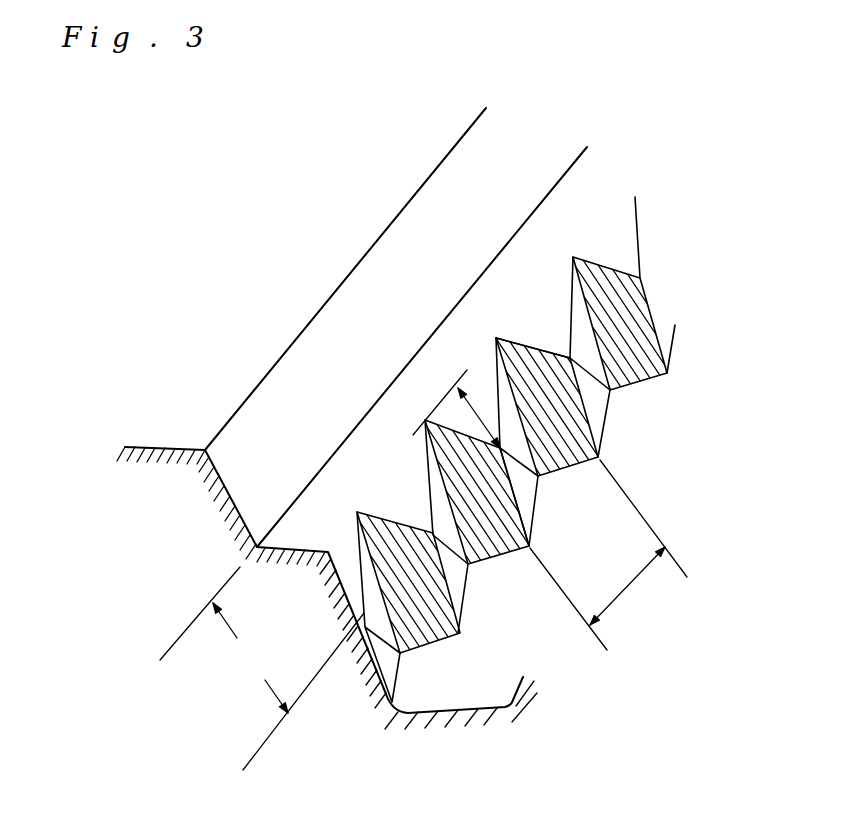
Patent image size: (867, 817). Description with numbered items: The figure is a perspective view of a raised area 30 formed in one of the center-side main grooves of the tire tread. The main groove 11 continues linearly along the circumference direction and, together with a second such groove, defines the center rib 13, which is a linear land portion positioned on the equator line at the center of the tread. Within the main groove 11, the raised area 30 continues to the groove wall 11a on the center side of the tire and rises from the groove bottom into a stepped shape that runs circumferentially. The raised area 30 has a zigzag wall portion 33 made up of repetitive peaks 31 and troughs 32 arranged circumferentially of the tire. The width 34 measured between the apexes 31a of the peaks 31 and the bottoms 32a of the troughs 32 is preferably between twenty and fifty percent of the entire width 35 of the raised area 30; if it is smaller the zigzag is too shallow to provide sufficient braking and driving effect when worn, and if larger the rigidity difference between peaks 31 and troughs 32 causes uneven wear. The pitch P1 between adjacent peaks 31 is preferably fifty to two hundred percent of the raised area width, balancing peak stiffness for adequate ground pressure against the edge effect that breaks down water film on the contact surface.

The main groove 11 is at (425, 693).
The groove wall 11a is at (455, 233).
The center rib 13 is at (337, 240).
The raised area 30 is at (585, 208).
The peak 31 is at (652, 312).
The apex 31a is at (498, 452).
The trough 32 is at (598, 457).
The bottom 32a is at (505, 330).
The zigzag wall portion 33 is at (667, 260).
The width 34 is at (473, 409).
The entire width 35 is at (262, 668).
The pitch P1 is at (608, 555).